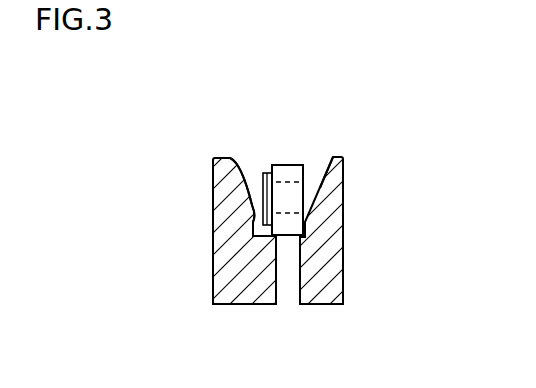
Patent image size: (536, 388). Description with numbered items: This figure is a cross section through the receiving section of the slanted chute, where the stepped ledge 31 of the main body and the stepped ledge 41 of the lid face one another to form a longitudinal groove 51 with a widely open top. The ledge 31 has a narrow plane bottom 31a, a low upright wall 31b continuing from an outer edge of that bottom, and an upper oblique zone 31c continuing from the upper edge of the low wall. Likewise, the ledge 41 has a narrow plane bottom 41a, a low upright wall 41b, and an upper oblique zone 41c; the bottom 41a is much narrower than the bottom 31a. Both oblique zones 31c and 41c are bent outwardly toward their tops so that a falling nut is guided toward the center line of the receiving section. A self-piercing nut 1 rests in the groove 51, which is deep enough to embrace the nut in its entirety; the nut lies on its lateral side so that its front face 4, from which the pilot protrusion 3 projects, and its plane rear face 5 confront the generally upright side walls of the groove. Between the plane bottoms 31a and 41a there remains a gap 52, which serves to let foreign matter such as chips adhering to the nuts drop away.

The self-piercing nut 1 is at (297, 165).
The pilot protrusion 3 is at (262, 180).
The front face 4 is at (270, 166).
The plane rear face 5 is at (305, 192).
The longitudinal groove 51 is at (306, 190).
The gap 52 is at (288, 275).
The stepped ledge 31 is at (220, 237).
The narrow plane bottom 31a is at (228, 304).
The low upright wall 31b is at (248, 199).
The upper oblique zone 31c is at (234, 158).
The stepped ledge 41 is at (333, 238).
The narrow plane bottom 41a is at (332, 304).
The low upright wall 41b is at (307, 228).
The upper oblique zone 41c is at (322, 160).